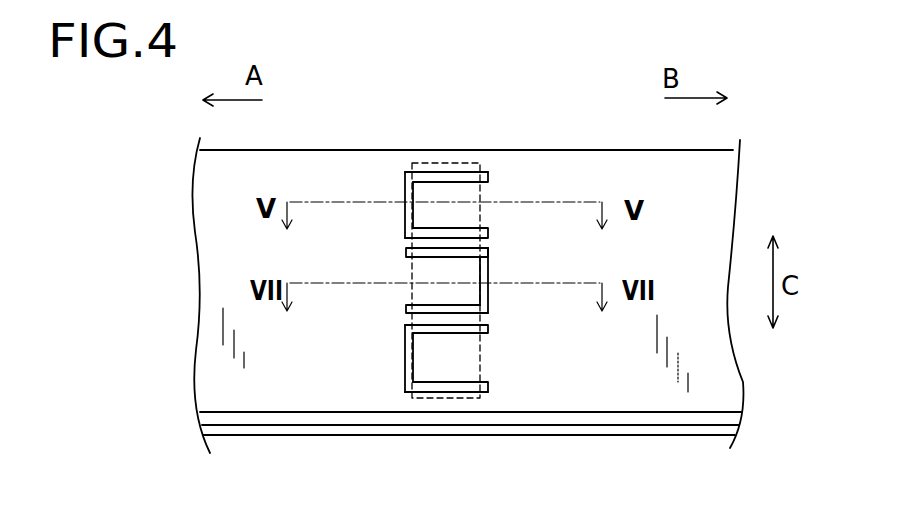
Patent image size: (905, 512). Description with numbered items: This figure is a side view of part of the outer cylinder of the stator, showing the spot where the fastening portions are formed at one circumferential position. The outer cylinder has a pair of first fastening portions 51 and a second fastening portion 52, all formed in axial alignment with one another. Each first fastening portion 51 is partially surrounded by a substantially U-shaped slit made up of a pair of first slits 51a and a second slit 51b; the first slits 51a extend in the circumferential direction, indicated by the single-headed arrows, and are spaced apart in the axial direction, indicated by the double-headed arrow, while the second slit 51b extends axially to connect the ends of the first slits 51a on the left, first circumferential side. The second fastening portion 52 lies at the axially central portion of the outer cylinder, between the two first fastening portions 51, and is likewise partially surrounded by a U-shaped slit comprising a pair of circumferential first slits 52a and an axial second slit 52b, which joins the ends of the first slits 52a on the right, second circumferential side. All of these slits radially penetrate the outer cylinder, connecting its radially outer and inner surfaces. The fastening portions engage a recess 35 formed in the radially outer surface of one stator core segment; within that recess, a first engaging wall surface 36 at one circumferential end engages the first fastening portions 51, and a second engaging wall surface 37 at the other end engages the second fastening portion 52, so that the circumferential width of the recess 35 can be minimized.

The recess 35 is at (447, 400).
The first engaging wall surface 36 is at (427, 183).
The second engaging wall surface 37 is at (478, 255).
The first fastening portion 51 is at (441, 243).
The first slit 51a is at (452, 227).
The second slit 51b is at (405, 212).
The second fastening portion 52 is at (452, 281).
The first slit 52a is at (437, 258).
The second slit 52b is at (488, 288).